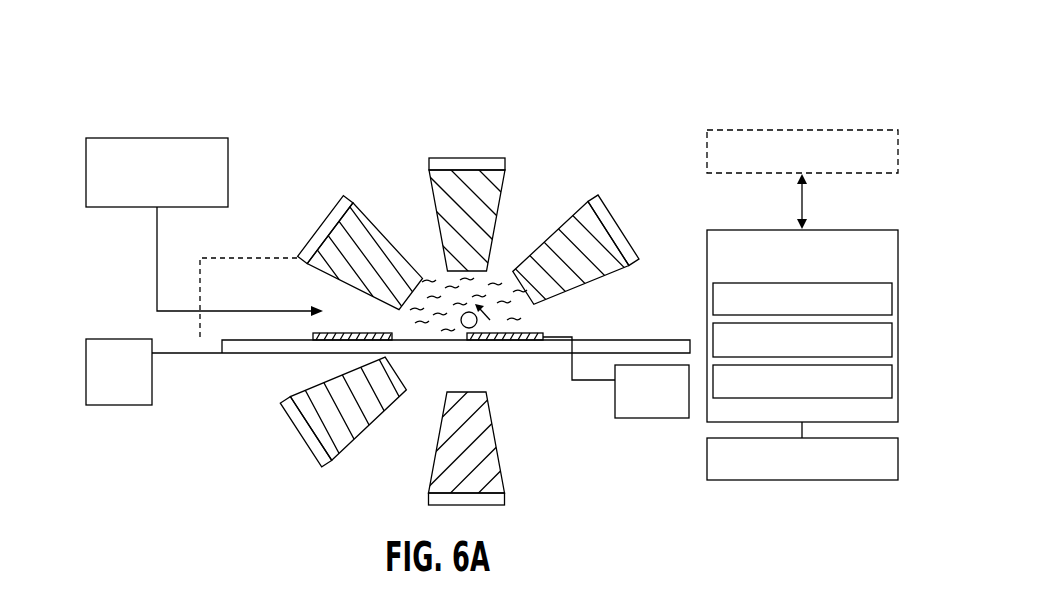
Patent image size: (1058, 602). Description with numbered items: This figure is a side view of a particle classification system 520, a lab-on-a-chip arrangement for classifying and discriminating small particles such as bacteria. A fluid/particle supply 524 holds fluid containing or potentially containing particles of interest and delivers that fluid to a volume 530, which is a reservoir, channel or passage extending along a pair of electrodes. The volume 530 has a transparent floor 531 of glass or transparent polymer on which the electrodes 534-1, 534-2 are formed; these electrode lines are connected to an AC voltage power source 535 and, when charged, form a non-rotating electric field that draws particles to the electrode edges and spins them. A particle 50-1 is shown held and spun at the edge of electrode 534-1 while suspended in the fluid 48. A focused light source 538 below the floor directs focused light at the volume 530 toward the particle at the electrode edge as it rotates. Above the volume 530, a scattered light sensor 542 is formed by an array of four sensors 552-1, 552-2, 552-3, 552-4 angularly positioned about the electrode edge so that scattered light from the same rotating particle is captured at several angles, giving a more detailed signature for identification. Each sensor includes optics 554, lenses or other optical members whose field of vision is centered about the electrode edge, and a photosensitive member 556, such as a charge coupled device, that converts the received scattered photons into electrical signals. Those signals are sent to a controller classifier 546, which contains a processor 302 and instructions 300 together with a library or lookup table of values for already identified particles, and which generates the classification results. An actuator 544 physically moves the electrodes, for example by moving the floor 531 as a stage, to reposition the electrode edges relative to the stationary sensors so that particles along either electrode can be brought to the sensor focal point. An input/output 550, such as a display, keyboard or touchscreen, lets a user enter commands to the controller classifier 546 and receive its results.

The particle classification system 520 is at (114, 102).
The fluid/particle supply 524 is at (117, 208).
The actuator 544 is at (86, 373).
The transparent floor 531 is at (232, 350).
The electrode 534-1 is at (533, 341).
The electrode 534-2 is at (305, 341).
The AC voltage power source 535 is at (653, 418).
The particle 50-1 is at (461, 327).
The volume 530 is at (520, 318).
The fluid 48 is at (495, 288).
The sensor 552-1 is at (340, 463).
The sensor 552-2 is at (322, 230).
The sensor 552-3 is at (511, 138).
The sensor 552-4 is at (630, 237).
The scattered light sensor 542 is at (370, 230).
The photosensitive member 556 is at (325, 230).
The optics 554 is at (355, 186).
The focused light source 538 is at (505, 503).
The controller classifier 546 is at (834, 313).
The processor 302 is at (893, 302).
The instructions 300 is at (893, 340).
The input/output 550 is at (823, 480).